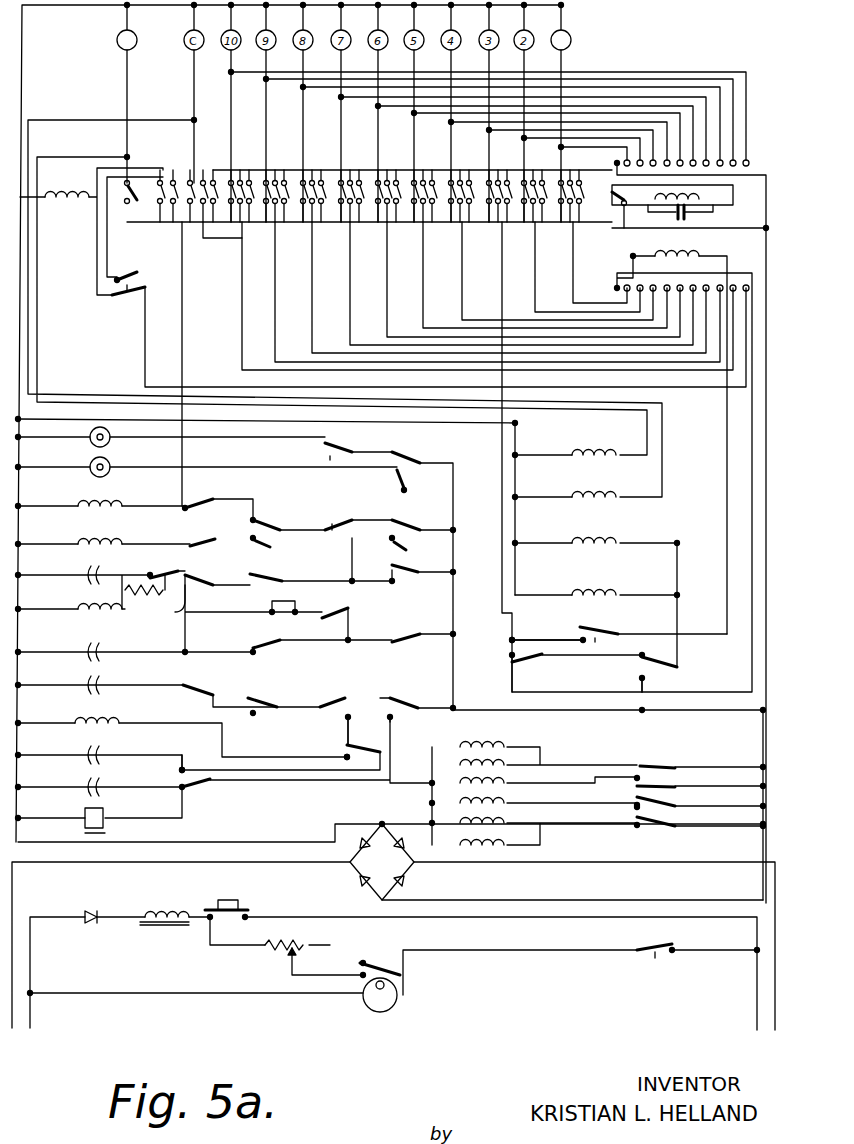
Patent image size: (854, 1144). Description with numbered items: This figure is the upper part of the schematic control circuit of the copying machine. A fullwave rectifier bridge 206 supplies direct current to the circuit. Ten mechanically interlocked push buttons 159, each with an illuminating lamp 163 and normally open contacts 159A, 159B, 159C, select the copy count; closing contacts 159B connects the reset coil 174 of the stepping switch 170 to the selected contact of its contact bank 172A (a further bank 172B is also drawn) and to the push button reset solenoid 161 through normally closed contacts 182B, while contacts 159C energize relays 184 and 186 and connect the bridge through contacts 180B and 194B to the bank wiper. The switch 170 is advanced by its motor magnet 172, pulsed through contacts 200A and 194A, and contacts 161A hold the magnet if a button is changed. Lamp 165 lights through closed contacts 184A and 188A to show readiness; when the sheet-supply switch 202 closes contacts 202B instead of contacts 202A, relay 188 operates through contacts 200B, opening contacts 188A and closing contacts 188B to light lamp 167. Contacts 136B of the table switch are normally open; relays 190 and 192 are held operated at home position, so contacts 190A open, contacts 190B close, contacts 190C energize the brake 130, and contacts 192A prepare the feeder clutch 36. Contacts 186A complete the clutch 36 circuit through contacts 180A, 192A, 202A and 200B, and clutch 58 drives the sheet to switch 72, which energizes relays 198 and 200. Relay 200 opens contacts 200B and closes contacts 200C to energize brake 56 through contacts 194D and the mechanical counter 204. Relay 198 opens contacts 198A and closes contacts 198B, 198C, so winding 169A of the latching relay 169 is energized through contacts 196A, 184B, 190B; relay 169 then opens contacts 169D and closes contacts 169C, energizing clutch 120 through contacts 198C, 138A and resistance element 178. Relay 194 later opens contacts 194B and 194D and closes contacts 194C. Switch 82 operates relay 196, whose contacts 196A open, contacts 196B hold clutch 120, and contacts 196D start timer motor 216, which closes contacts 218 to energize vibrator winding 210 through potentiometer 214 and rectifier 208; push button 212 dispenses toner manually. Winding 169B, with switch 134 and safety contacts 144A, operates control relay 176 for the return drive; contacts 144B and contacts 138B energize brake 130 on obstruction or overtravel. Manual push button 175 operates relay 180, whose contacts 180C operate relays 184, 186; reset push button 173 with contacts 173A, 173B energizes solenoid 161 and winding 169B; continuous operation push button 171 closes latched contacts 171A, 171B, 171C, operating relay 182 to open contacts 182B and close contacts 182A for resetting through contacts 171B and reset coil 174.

The illuminating lamp 163 is at (117, 42).
The contacts 171A is at (190, 172).
The contacts 171B is at (205, 172).
The contacts 171C is at (214, 224).
The continuous operation push button 171 is at (221, 246).
The reset push button 173 is at (160, 226).
The contacts 173A is at (146, 200).
The contacts 173B is at (174, 208).
The manual push button 175 is at (124, 203).
The push button reset solenoid 161 is at (68, 203).
The contacts 161A is at (638, 205).
The contacts 182A is at (143, 271).
The contacts 182B is at (114, 296).
The push buttons 159 is at (416, 172).
The contacts 159A is at (390, 172).
The contacts 159B is at (397, 208).
The contacts 159C is at (424, 208).
The reset coil 174 is at (672, 201).
The stepping switch 170 is at (778, 226).
The motor magnet 172 is at (700, 250).
The contact bank 172A is at (768, 322).
The terminal bank 172B is at (752, 166).
The lamp 165 is at (112, 437).
The lamp 167 is at (112, 466).
The mechanical latching relay 169 is at (75, 514).
The second winding 169A is at (112, 533).
The winding 169B is at (80, 502).
The contacts 169C is at (262, 572).
The contacts 169D is at (396, 648).
The clutch 120 is at (88, 572).
The control relay 176 is at (76, 607).
The resistance element 178 is at (142, 594).
The brake assembly 130 is at (88, 650).
The clutch 36 is at (88, 683).
The relay 188 is at (112, 720).
The clutch 58 is at (88, 753).
The brake 56 is at (88, 785).
The mechanical counter 204 is at (104, 814).
The contacts 136B is at (154, 572).
The contacts 138A is at (210, 573).
The contacts 138B is at (178, 614).
The contacts 198A is at (200, 504).
The contacts 198B is at (214, 536).
The contacts 198C is at (404, 576).
The contacts 190A is at (258, 516).
The contacts 190B is at (265, 548).
The contacts 190C is at (272, 650).
The contacts 184A is at (333, 444).
The contacts 184B is at (324, 528).
The contacts 188A is at (403, 454).
The contacts 188B is at (420, 483).
The contacts 196A is at (396, 520).
The contacts 196B is at (405, 548).
The contacts 196D is at (642, 952).
The contacts 144A is at (268, 615).
The contacts 144B is at (303, 598).
The switch 134 is at (334, 616).
The contacts 180A is at (190, 686).
The contacts 180B is at (650, 650).
The contacts 180C is at (642, 678).
The contacts 192A is at (273, 713).
The contacts 186A is at (350, 702).
The contacts 200A is at (578, 630).
The contacts 200B is at (396, 696).
The contacts 200C is at (398, 718).
The switch 202 is at (354, 742).
The contacts 202A is at (346, 744).
The contacts 202B is at (344, 756).
The contacts 194A is at (510, 640).
The contacts 194B is at (510, 662).
The contacts 194C is at (180, 770).
The contacts 194D is at (186, 790).
The manual control relay 180 is at (580, 450).
The relay 182 is at (580, 492).
The relay 184 is at (582, 538).
The relay 186 is at (584, 590).
The relay 190 is at (486, 740).
The relay 192 is at (505, 760).
The relay 194 is at (432, 780).
The relay 196 is at (432, 802).
The relay 198 is at (510, 820).
The relay 200 is at (500, 845).
The switch 82 is at (672, 803).
The switch 72 is at (660, 830).
The fullwave rectifier bridge 206 is at (350, 880).
The rectifier 208 is at (88, 910).
The vibrator winding 210 is at (142, 930).
The push button 212 is at (232, 892).
The potentiometer 214 is at (288, 943).
The contacts 218 is at (360, 963).
The motor 216 is at (376, 1010).